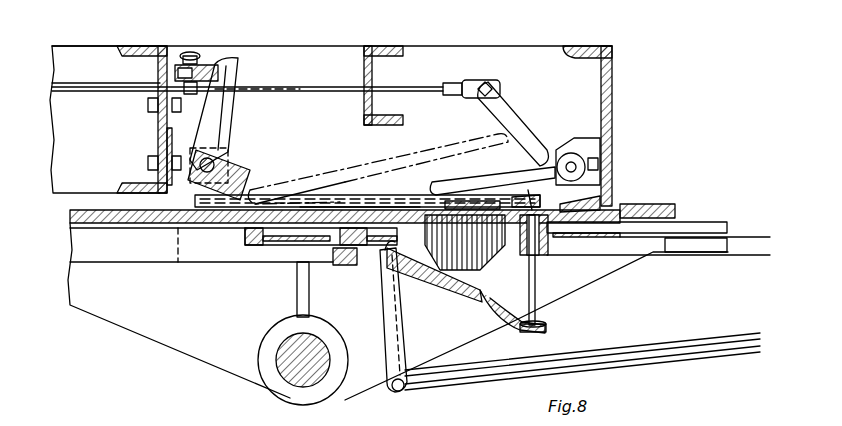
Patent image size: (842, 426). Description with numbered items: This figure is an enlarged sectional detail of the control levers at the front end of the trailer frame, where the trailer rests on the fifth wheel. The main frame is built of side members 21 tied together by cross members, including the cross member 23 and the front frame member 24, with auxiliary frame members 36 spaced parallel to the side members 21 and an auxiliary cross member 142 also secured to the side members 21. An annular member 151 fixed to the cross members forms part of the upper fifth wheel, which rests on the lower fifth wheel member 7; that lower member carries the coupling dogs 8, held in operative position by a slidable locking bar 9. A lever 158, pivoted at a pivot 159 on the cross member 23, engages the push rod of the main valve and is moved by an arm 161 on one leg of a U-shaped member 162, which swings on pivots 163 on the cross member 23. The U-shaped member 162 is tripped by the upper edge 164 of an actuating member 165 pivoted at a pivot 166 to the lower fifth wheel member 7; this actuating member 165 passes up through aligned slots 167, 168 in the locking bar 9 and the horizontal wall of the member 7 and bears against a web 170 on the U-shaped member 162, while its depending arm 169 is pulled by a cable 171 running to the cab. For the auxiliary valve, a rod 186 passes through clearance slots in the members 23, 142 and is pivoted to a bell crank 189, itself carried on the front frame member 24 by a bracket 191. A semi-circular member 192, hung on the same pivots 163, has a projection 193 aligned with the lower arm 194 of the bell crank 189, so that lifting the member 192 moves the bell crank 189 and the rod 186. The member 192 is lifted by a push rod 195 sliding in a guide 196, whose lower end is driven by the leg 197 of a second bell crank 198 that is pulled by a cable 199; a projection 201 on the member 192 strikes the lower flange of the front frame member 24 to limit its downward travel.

The lower fifth wheel member 7 is at (110, 225).
The coupling dogs 8 is at (255, 248).
The locking bar 9 is at (768, 236).
The side members 21 is at (470, 60).
The cross member 23 is at (140, 47).
The front frame member 24 is at (612, 115).
The auxiliary frame members 36 is at (77, 55).
The auxiliary cross member 142 is at (383, 50).
The annular member 151 is at (665, 205).
The lever 158 is at (200, 70).
The pivot 159 is at (191, 52).
The arm 161 is at (222, 122).
The U-shaped member 162 is at (452, 150).
The pivots 163 is at (216, 165).
The upper edge 164 is at (468, 228).
The actuating member 165 is at (468, 268).
The pivot 166 is at (386, 255).
The slot 167 is at (400, 201).
The slot 168 is at (520, 200).
The depending arm 169 is at (398, 392).
The web 170 is at (456, 200).
The cable 171 is at (500, 378).
The rod 186 is at (305, 86).
The bell crank 189 is at (542, 109).
The bracket 191 is at (585, 140).
The semi-circular member 192 is at (530, 190).
The projection 193 is at (440, 198).
The lower arm 194 is at (476, 183).
The push rod 195 is at (545, 313).
The guide 196 is at (549, 250).
The leg 197 is at (549, 330).
The bell crank 198 is at (383, 291).
The cable 199 is at (476, 370).
The projection 201 is at (605, 197).